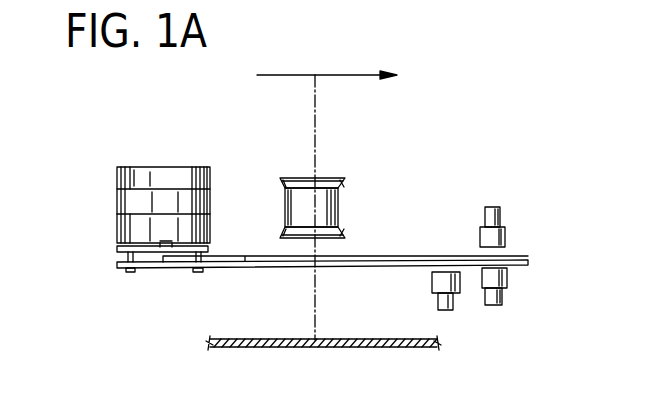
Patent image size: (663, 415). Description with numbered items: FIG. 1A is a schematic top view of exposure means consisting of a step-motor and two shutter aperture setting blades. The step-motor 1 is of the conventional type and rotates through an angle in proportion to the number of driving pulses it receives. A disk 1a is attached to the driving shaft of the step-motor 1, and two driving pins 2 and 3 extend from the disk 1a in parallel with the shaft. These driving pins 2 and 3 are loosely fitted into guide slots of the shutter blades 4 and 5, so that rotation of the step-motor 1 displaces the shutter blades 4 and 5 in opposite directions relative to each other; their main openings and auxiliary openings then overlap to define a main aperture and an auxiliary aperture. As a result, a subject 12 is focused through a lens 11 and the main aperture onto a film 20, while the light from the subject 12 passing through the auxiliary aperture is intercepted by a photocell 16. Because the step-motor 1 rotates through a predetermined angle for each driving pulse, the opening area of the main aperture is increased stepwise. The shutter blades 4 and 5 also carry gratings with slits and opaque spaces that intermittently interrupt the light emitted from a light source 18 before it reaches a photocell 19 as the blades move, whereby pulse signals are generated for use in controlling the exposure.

The step-motor 1 is at (161, 176).
The disk 1a is at (117, 249).
The driving pin 2 is at (131, 272).
The driving pin 3 is at (198, 272).
The shutter blade 4 is at (257, 268).
The shutter blade 5 is at (229, 256).
The lens 11 is at (345, 196).
The subject 12 is at (347, 74).
The photocell 16 is at (432, 287).
The light source 18 is at (492, 207).
The photocell 19 is at (493, 305).
The film 20 is at (343, 347).